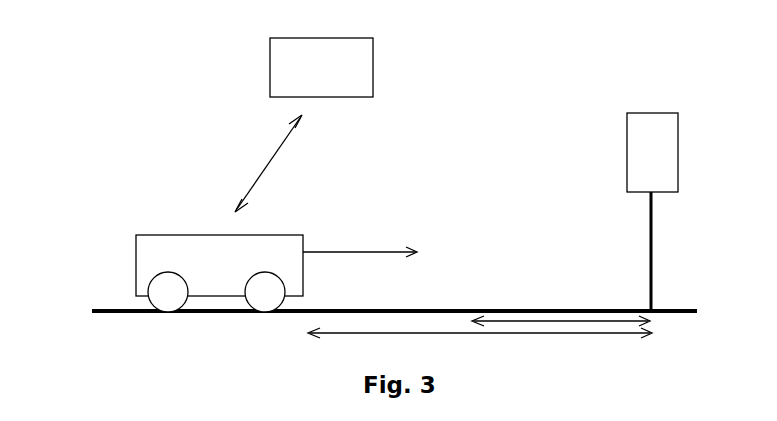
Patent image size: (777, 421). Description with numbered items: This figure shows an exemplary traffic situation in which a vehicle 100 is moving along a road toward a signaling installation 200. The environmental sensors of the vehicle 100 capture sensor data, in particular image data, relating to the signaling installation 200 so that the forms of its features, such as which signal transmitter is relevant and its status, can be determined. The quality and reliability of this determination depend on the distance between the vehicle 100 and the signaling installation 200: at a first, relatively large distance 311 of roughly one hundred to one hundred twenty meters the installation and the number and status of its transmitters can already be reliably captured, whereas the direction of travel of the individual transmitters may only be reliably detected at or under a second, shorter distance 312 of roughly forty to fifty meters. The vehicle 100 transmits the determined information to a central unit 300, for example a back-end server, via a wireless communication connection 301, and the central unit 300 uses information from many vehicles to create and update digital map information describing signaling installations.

The vehicle 100 is at (135, 262).
The signaling installation 200 is at (626, 158).
The central unit 300 is at (270, 73).
The wireless communication connection 301 is at (262, 167).
The first distance 311 is at (385, 332).
The second distance 312 is at (528, 320).